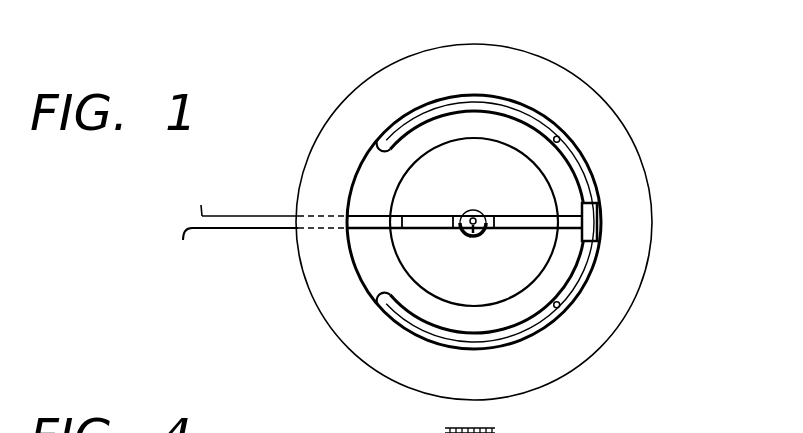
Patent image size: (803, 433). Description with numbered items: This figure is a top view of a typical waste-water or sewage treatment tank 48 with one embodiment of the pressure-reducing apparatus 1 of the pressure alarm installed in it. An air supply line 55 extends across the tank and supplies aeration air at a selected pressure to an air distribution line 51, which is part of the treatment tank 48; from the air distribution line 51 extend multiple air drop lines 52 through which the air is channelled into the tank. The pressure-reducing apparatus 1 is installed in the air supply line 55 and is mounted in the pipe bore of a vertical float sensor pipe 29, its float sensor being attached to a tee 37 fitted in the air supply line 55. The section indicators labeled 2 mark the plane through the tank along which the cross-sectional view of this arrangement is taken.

The pressure-reducing apparatus 1 is at (470, 237).
The section line 2- 2 is at (193, 270).
The vertical float sensor pipe 29 is at (472, 206).
The tee 37 is at (455, 238).
The treatment tank 48 is at (298, 304).
The air distribution line 51 is at (528, 120).
The air drop lines 52 is at (375, 148).
The air supply line 55 is at (270, 214).